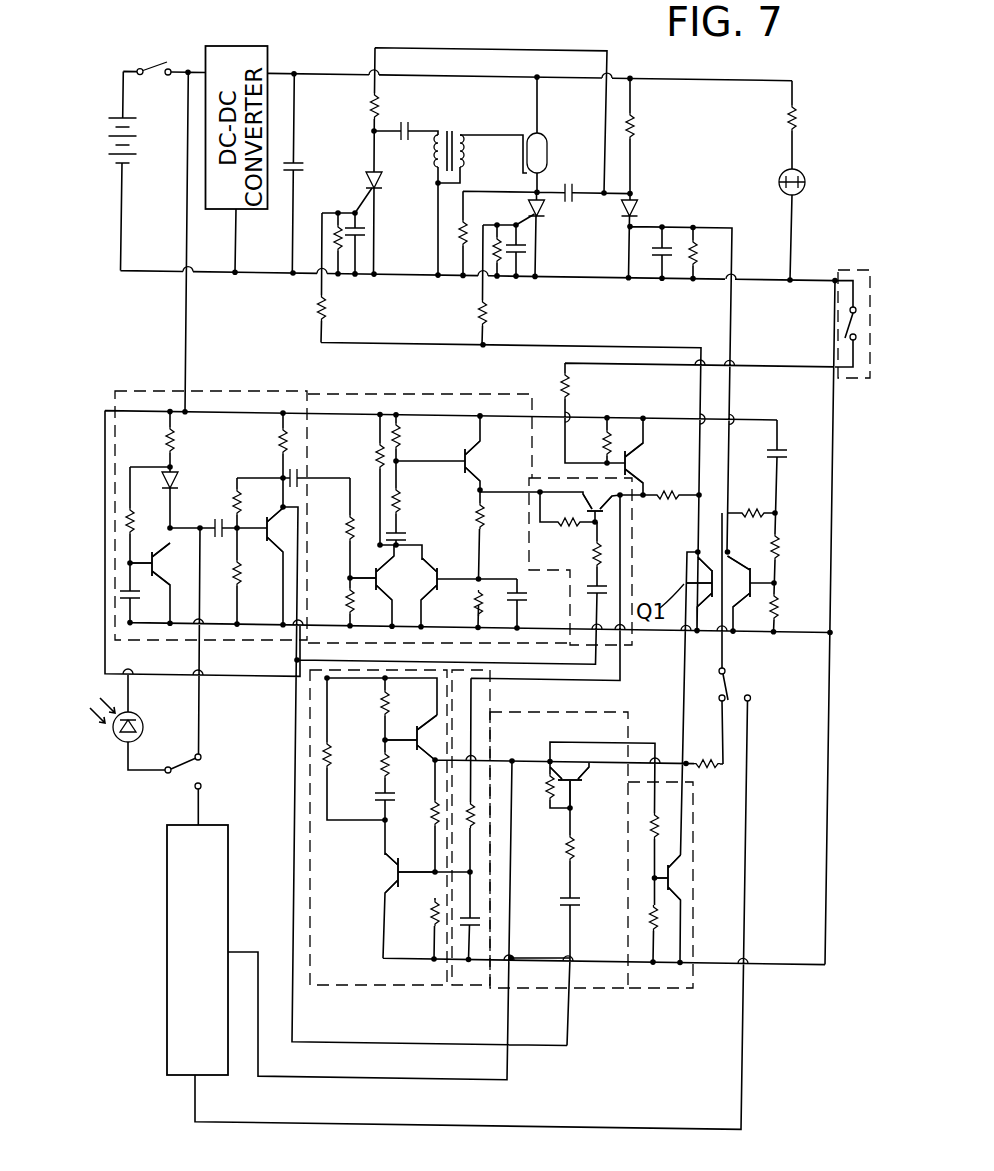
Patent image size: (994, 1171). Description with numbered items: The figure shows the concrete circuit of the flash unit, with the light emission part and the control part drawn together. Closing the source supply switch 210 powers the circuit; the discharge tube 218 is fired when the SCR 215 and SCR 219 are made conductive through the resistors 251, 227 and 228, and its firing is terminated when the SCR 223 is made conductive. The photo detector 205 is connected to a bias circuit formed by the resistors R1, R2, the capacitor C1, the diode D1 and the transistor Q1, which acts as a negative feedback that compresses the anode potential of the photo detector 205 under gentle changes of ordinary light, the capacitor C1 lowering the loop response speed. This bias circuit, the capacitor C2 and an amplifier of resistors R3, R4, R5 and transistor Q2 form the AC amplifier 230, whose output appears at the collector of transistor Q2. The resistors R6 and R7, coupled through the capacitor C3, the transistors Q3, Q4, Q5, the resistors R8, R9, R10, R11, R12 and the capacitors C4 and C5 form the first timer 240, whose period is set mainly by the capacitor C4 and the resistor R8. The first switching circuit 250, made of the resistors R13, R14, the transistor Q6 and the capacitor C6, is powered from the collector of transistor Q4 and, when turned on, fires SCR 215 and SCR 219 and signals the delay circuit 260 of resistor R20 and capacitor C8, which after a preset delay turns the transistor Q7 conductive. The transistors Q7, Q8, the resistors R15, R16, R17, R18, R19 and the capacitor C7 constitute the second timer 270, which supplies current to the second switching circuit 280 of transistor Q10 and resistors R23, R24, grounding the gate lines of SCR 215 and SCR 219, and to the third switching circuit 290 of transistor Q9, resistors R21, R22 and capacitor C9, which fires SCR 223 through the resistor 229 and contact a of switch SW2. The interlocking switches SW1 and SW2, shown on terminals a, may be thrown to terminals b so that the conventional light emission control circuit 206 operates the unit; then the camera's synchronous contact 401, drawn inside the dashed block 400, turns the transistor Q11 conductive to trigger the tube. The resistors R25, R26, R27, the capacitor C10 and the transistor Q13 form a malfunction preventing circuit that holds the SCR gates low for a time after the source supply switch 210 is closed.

The source supply switch 210 is at (156, 62).
The SCR 215 is at (368, 180).
The discharge tube 218 is at (541, 134).
The SCR 219 is at (546, 208).
The SCR 223 is at (640, 206).
The resistor 227 is at (330, 309).
The resistor 228 is at (492, 312).
The resistor 229 is at (708, 770).
The switch unit 400 is at (854, 268).
The synchronous contact 401 is at (846, 330).
The AC amplifier 230 is at (242, 402).
The first timer 240 is at (383, 397).
The first switching circuit 250 is at (605, 511).
The resistor 251 is at (668, 494).
The delay circuit 260 is at (467, 975).
The second timer 270 is at (348, 975).
The second switching circuit 280 is at (657, 982).
The third switching circuit 290 is at (580, 982).
The photo detector 205 is at (145, 726).
The light emission control circuit 206 is at (167, 885).
The interlocking switch SW1 is at (172, 782).
The interlocking switch SW2 is at (726, 676).
The resistor R1 is at (178, 441).
The resistor R2 is at (132, 512).
The resistor R3 is at (240, 587).
The resistor R4 is at (239, 496).
The resistor R5 is at (282, 444).
The resistor R6 is at (347, 524).
The resistor R7 is at (346, 598).
The resistor R8 is at (405, 500).
The resistor R9 is at (378, 457).
The resistor R10 is at (403, 441).
The resistor R11 is at (484, 516).
The resistor R12 is at (476, 602).
The resistor R13 is at (564, 526).
The resistor R14 is at (602, 555).
The resistor R15 is at (330, 762).
The resistor R16 is at (382, 706).
The resistor R17 is at (378, 772).
The resistor R18 is at (425, 821).
The resistor R19 is at (428, 920).
The resistor R20 is at (474, 823).
The resistor R21 is at (548, 791).
The resistor R22 is at (574, 848).
The resistor R23 is at (650, 830).
The resistor R24 is at (650, 916).
The resistor R25 is at (750, 525).
The resistor R26 is at (780, 550).
The resistor R27 is at (780, 606).
The capacitor C1 is at (134, 598).
The capacitor C2 is at (220, 538).
The capacitor C3 is at (298, 476).
The capacitor C4 is at (407, 536).
The capacitor C5 is at (524, 600).
The capacitor C6 is at (608, 589).
The capacitor C7 is at (392, 800).
The capacitor C8 is at (474, 914).
The capacitor C9 is at (560, 904).
The capacitor C10 is at (786, 459).
The diode D1 is at (179, 486).
The transistor Q1 is at (158, 556).
The transistor Q2 is at (269, 544).
The transistor Q3 is at (378, 592).
The transistor Q4 is at (479, 460).
The transistor Q5 is at (435, 572).
The transistor Q6 is at (589, 502).
The transistor Q7 is at (382, 882).
The transistor Q8 is at (417, 730).
The transistor Q9 is at (580, 782).
The transistor Q10 is at (682, 876).
The transistor Q11 is at (633, 458).
The transistor Q13 is at (744, 572).